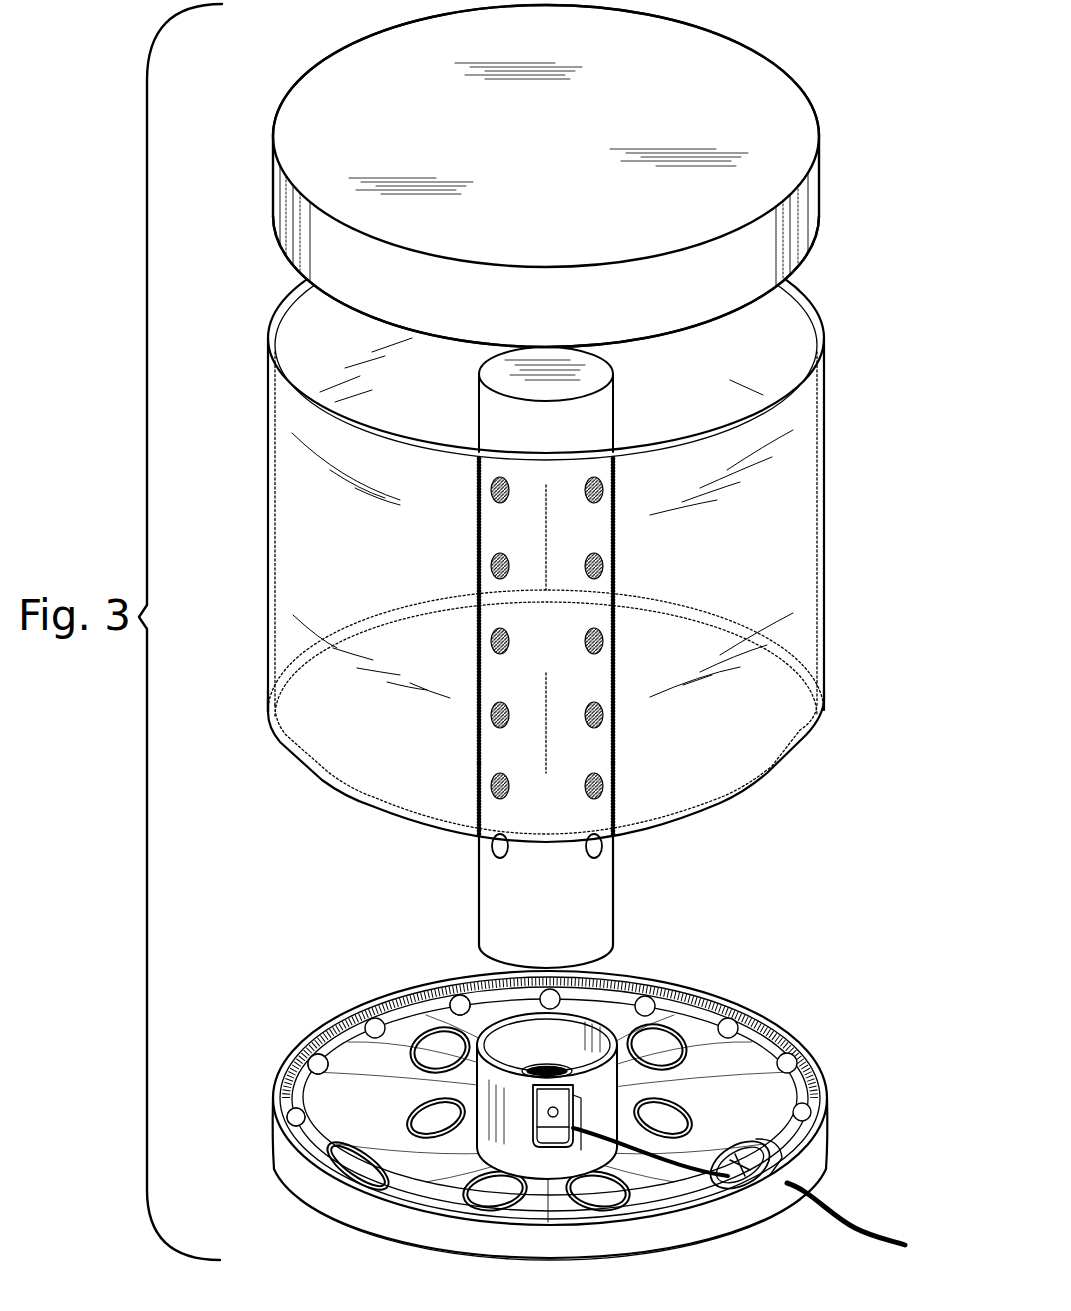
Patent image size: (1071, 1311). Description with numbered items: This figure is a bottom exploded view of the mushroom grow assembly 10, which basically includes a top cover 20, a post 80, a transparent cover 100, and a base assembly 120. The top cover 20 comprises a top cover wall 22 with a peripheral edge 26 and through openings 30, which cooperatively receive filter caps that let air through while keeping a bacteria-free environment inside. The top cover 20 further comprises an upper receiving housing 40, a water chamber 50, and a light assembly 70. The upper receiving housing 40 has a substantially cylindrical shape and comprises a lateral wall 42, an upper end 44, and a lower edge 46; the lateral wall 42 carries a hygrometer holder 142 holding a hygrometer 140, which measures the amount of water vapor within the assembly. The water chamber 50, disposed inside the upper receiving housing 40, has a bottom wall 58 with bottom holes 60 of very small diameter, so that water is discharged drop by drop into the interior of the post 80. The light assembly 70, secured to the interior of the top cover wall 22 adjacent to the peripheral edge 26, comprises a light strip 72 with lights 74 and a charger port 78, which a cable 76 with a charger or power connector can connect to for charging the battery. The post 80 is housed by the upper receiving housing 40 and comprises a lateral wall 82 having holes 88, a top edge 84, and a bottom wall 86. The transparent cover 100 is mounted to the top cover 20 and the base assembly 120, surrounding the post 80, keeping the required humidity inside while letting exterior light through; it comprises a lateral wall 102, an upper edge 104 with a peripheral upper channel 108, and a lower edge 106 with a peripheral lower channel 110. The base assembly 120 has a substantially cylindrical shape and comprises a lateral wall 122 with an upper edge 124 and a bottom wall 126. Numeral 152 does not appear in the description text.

The mushroom grow assembly 10 is at (860, 78).
The top cover 20 is at (278, 1032).
The top cover wall 22 is at (345, 1198).
The peripheral edge 26 is at (770, 1018).
The through openings 30 is at (410, 1112).
The upper receiving housing 40 is at (628, 1100).
The lateral wall 42 is at (597, 1085).
The upper end 44 is at (347, 1195).
The lower edge 46 is at (625, 1035).
The water chamber 50 is at (565, 1056).
The bottom wall 58 is at (546, 1066).
The bottom holes 60 is at (450, 1003).
The light assembly 70 is at (288, 1058).
The light strip 72 is at (330, 1048).
The lights 74 is at (378, 1027).
The cable 76 is at (345, 1052).
The charger port 78 is at (770, 1175).
The post 80 is at (472, 873).
The lateral wall 82 is at (560, 890).
The top edge 84 is at (618, 968).
The bottom wall 86 is at (492, 386).
The holes 88 is at (497, 722).
The transparent cover 100 is at (262, 490).
The lateral wall 102 is at (762, 522).
The upper edge 104 is at (800, 762).
The lower edge 106 is at (772, 412).
The peripheral upper channel 108 is at (270, 690).
The peripheral lower channel 110 is at (268, 352).
The base assembly 120 is at (262, 140).
The lateral wall 122 is at (340, 242).
The upper edge 124 is at (812, 262).
The bottom wall 126 is at (405, 92).
The hygrometer 140 is at (623, 1150).
The hygrometer holder 142 is at (537, 1108).
The power cord 152 is at (752, 1210).